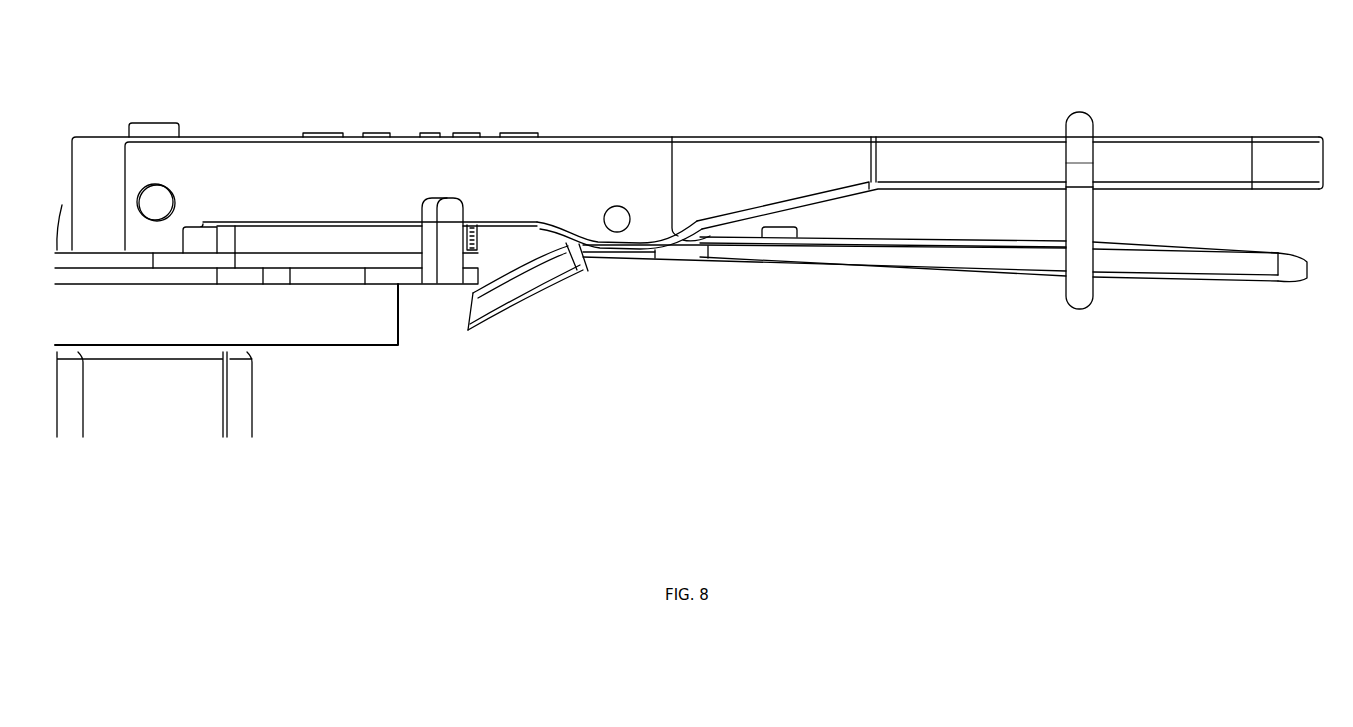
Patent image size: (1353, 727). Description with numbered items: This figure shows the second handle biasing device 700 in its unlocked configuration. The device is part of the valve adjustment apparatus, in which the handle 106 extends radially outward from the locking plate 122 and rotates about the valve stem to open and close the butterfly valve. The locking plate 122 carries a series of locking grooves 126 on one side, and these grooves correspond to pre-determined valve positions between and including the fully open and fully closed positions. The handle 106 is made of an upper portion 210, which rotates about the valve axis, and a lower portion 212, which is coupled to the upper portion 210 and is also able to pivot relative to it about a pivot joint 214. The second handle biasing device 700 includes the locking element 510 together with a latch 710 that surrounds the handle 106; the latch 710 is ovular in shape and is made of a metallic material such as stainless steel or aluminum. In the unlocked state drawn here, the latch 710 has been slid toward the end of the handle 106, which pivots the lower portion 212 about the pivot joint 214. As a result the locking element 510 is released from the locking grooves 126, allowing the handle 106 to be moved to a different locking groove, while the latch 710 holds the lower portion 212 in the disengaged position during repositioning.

The second handle biasing device 700 is at (455, 48).
The handle 106 is at (967, 200).
The locking plate 122 is at (337, 272).
The locking grooves 126 is at (443, 292).
The locking element 510 is at (507, 323).
The pivot joint 214 is at (617, 223).
The upper portion 210 is at (1162, 138).
The lower portion 212 is at (1152, 275).
The latch 710 is at (1078, 120).